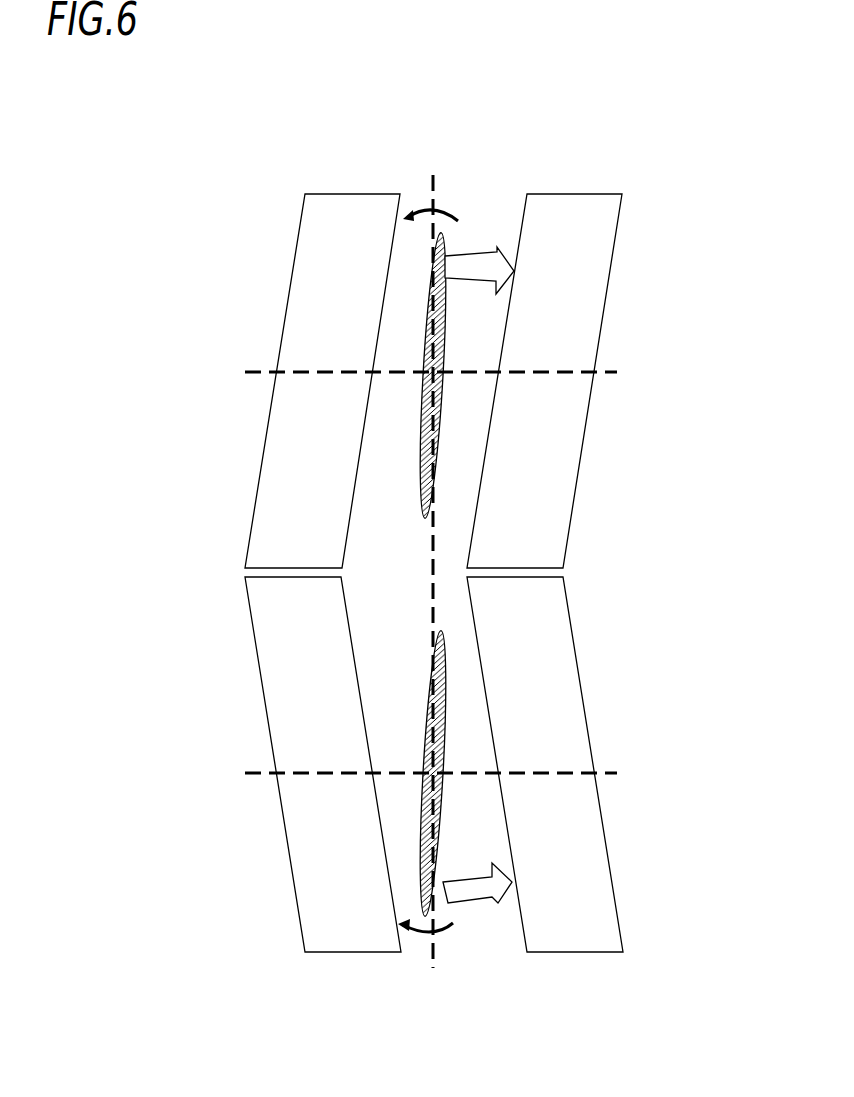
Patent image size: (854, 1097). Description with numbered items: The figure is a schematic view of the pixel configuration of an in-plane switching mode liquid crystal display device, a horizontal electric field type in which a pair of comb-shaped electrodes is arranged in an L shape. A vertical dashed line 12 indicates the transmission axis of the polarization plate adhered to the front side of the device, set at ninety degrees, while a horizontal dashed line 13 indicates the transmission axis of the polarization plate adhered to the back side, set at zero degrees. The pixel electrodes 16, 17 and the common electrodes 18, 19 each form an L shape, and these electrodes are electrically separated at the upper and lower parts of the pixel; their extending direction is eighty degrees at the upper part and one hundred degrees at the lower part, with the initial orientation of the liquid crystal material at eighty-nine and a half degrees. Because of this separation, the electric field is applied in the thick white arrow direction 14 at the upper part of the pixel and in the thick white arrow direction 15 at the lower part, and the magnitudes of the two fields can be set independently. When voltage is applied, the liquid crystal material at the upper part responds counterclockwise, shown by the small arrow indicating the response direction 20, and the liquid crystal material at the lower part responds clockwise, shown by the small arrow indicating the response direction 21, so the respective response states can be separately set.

The dashed line indicating transmission axis of front-side polarization plate 12 is at (433, 173).
The dashed line indicating transmission axis of back-side polarization plate 13 is at (602, 370).
The thick white arrow direction 14 is at (485, 260).
The thick white arrow direction 15 is at (483, 898).
The pixel electrode 16 is at (563, 480).
The pixel electrode 17 is at (608, 837).
The common electrode 18 is at (267, 452).
The common electrode 19 is at (267, 695).
The response direction of the liquid crystal material 20 is at (420, 208).
The response direction of the liquid crystal material 21 is at (420, 935).